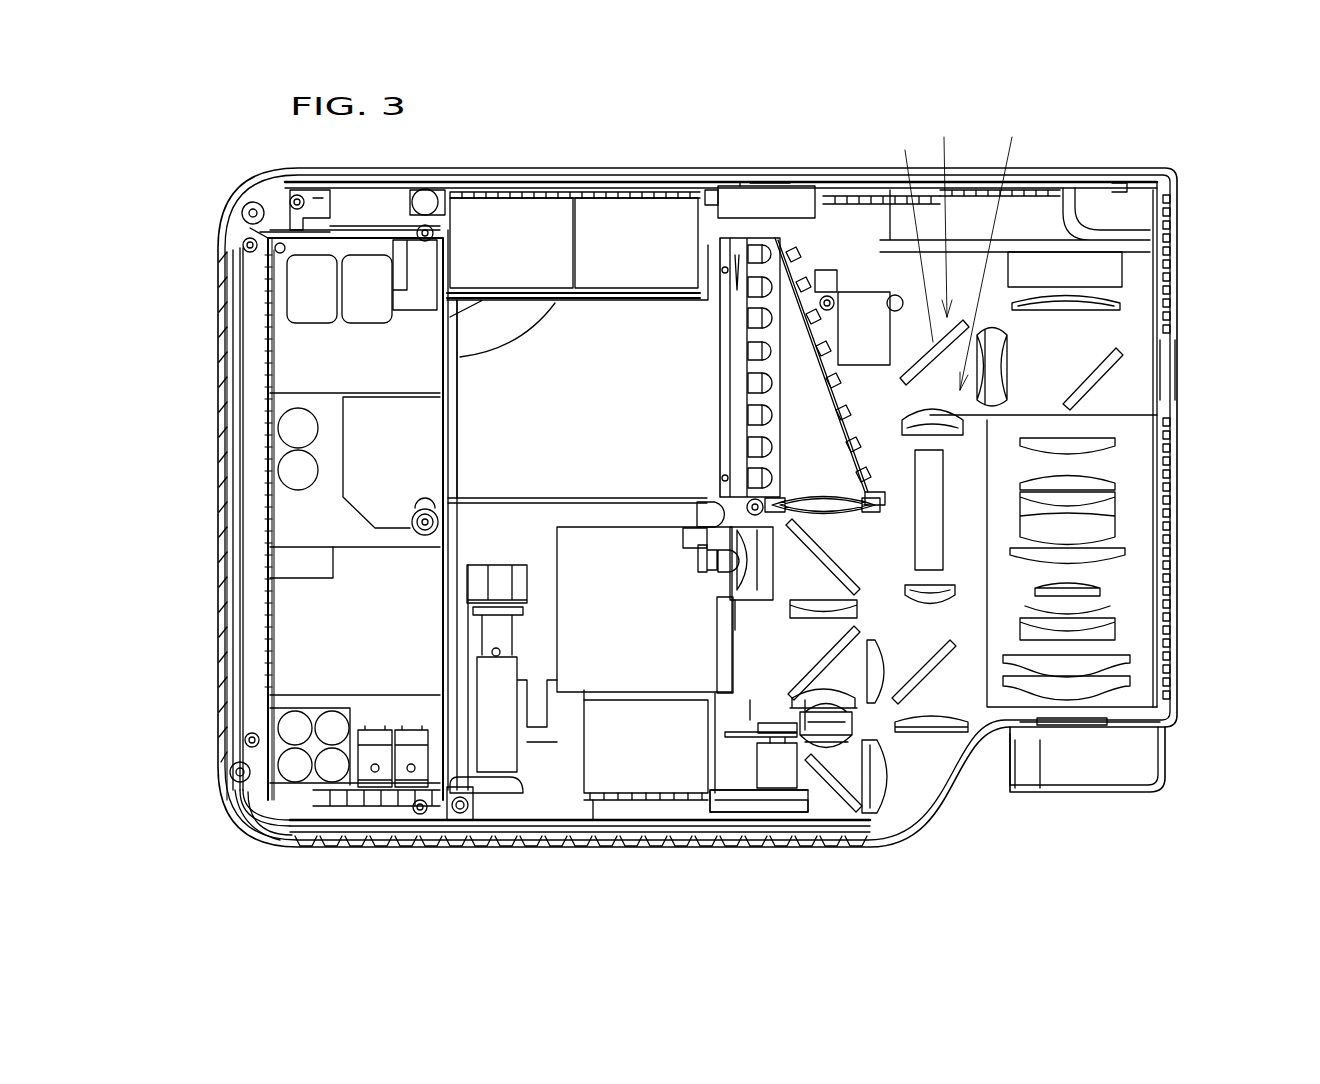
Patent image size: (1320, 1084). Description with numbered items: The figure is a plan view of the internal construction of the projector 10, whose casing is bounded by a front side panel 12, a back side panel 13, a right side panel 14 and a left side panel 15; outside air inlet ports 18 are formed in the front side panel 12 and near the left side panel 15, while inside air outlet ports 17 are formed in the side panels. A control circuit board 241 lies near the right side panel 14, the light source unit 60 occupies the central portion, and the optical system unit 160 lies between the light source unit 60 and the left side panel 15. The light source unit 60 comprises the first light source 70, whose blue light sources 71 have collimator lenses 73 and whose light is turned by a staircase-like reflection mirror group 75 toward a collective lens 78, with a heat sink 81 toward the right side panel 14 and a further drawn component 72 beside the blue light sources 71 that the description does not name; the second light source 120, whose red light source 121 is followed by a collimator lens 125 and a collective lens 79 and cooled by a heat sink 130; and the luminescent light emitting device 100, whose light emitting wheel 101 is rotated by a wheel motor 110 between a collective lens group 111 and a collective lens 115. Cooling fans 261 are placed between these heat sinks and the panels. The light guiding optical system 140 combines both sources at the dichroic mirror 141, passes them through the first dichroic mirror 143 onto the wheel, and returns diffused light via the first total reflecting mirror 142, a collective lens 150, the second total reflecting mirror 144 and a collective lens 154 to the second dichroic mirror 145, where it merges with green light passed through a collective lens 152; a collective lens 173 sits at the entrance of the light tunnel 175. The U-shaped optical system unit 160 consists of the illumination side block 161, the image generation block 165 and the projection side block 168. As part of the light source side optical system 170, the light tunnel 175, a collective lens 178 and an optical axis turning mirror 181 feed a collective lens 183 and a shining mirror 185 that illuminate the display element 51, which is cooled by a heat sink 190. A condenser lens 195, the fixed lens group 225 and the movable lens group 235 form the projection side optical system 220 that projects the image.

The projector 10 is at (1200, 160).
The front side panel 12 is at (367, 833).
The back side panel 13 is at (563, 182).
The right side panel 14 is at (218, 331).
The left side panel 15 is at (1177, 660).
The inside air outlet ports 17 is at (218, 375).
The outside air inlet ports 18 is at (522, 192).
The display element 51 is at (1103, 282).
The light source unit 60 is at (680, 457).
The first light source 70 is at (737, 290).
The blue light sources 71 is at (768, 385).
The heat sink 72 is at (745, 318).
The collimator lenses 73 is at (768, 352).
The reflection mirror group 75 is at (837, 418).
The collective lens 78 is at (810, 505).
The collective lens 79 is at (747, 565).
The heat sink 81 is at (608, 335).
The luminescent light emitting device 100 is at (775, 795).
The light emitting wheel 101 is at (745, 733).
The wheel motor 110 is at (773, 773).
The collective lens group 111 is at (905, 745).
The collective lens 115 is at (866, 722).
The second light source 120 is at (692, 706).
The red light source 121 is at (705, 567).
The collimator lens 125 is at (718, 572).
The heat sink 130 is at (590, 644).
The light guiding optical system 140 is at (1057, 713).
The dichroic mirror for illumination light 141 is at (828, 562).
The first total reflecting mirror 142 is at (826, 745).
The first dichroic mirror 143 is at (822, 665).
The second total reflecting mirror 144 is at (973, 705).
The second dichroic mirror 145 is at (927, 662).
The collective lens 150 is at (880, 760).
The collective lens 152 is at (880, 640).
The collective lens 154 is at (930, 725).
The optical system unit 160 is at (1112, 700).
The illumination side block 161 is at (996, 250).
The image generation block 165 is at (1122, 333).
The projection side block 168 is at (1138, 497).
The light source side optical system 170 is at (944, 214).
The collective lens 173 is at (930, 600).
The light tunnel 175 is at (930, 550).
The collective lens 178 is at (930, 415).
The optical axis turning mirror 181 is at (907, 150).
The collective lens 183 is at (1003, 343).
The shining mirror 185 is at (1097, 377).
The heat sink 190 is at (1032, 212).
The condenser lens 195 is at (1103, 298).
The projection side optical system 220 is at (1138, 527).
The fixed lens group 225 is at (1120, 700).
The movable lens group 235 is at (1140, 468).
The control circuit board 241 is at (333, 592).
The cooling fans 261 is at (470, 240).